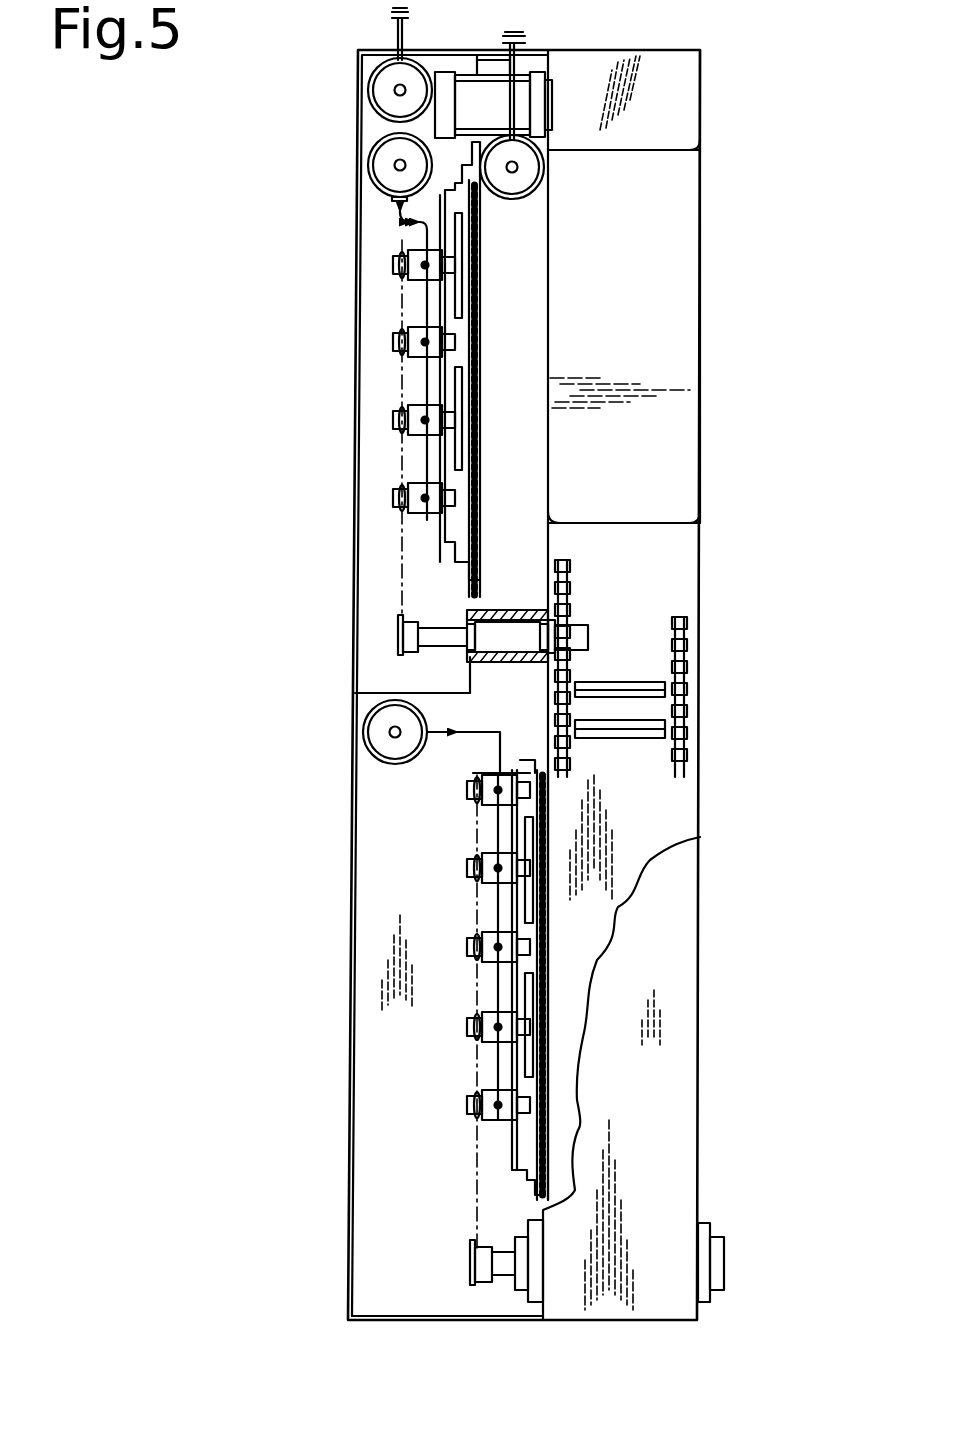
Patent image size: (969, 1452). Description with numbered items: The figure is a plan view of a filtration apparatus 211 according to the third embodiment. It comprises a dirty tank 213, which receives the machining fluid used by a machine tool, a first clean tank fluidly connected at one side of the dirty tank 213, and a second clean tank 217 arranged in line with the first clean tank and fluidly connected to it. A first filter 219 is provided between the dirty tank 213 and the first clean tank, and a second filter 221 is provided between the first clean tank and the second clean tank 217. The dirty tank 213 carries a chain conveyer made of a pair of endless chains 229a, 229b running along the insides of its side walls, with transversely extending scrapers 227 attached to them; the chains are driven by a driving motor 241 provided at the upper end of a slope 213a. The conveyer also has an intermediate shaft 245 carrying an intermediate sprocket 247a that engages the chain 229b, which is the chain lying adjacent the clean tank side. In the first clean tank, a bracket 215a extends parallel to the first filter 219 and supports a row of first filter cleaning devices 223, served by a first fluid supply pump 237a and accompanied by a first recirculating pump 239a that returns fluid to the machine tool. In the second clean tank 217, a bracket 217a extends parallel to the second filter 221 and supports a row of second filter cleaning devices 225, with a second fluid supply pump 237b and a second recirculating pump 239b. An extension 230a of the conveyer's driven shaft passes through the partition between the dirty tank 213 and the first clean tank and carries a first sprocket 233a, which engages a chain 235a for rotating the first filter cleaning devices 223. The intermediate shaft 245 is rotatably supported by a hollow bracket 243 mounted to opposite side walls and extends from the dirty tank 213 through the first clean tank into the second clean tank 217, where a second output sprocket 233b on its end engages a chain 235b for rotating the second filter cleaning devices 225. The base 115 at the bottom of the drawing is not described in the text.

The base 115 is at (377, 1301).
The filtration apparatus 211 is at (268, 168).
The dirty tank 213 is at (686, 924).
The slope 213a is at (686, 224).
The bracket 215a is at (512, 1150).
The second clean tank 217 is at (372, 557).
The bracket 217a is at (442, 542).
The first filter 219 is at (548, 1070).
The second filter 221 is at (482, 282).
The first filter cleaning devices 223 is at (462, 926).
The second filter cleaning devices 225 is at (388, 335).
The scrapers 227 is at (617, 738).
The endless chain 229a is at (688, 625).
The endless chain 229b is at (570, 618).
The extension of the driven shaft 230a is at (492, 1256).
The first sprocket 233a is at (470, 1280).
The second output sprocket 233b is at (398, 656).
The chain 235a is at (473, 1172).
The chain 235b is at (397, 582).
The first fluid supply pump 237a is at (366, 735).
The second fluid supply pump 237b is at (368, 166).
The first recirculating pump 239a is at (542, 169).
The second recirculating pump 239b is at (369, 86).
The driving motor 241 is at (503, 107).
The hollow bracket 243 is at (509, 610).
The intermediate shaft 245 is at (505, 656).
The intermediate sprocket 247a is at (572, 570).